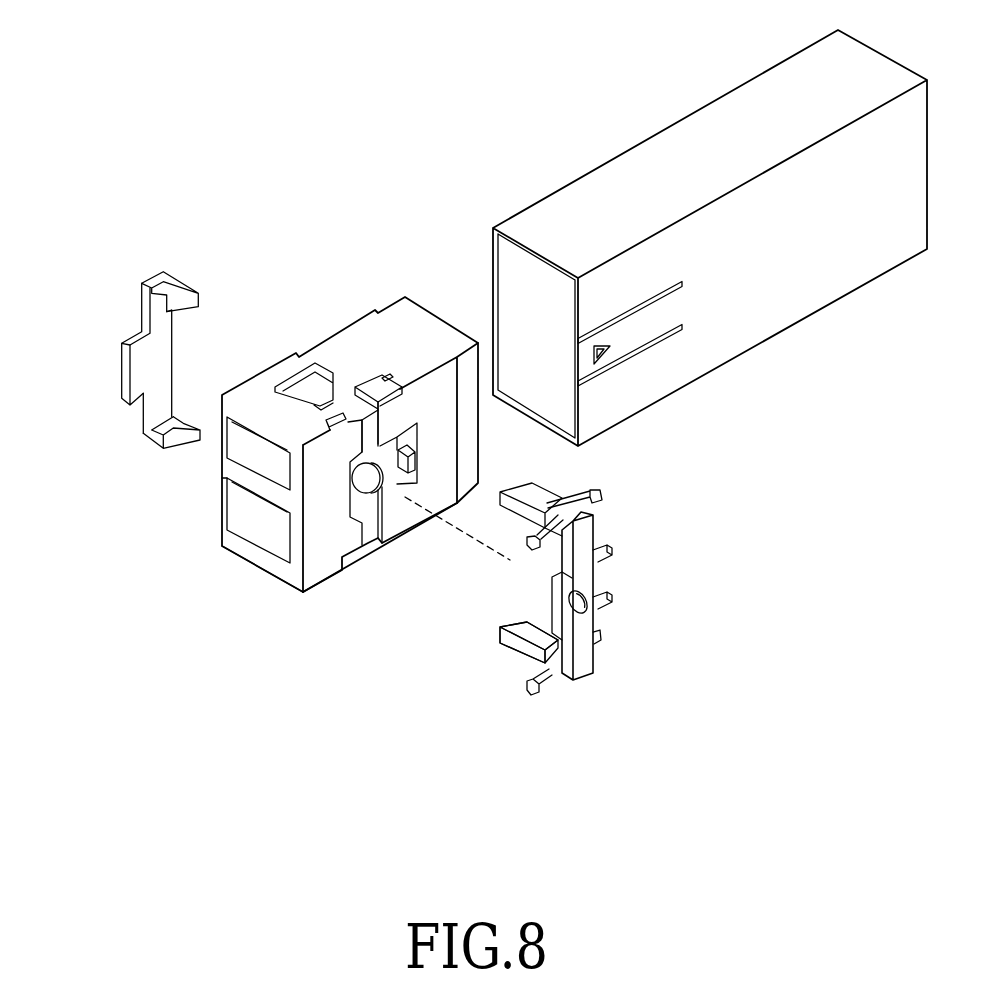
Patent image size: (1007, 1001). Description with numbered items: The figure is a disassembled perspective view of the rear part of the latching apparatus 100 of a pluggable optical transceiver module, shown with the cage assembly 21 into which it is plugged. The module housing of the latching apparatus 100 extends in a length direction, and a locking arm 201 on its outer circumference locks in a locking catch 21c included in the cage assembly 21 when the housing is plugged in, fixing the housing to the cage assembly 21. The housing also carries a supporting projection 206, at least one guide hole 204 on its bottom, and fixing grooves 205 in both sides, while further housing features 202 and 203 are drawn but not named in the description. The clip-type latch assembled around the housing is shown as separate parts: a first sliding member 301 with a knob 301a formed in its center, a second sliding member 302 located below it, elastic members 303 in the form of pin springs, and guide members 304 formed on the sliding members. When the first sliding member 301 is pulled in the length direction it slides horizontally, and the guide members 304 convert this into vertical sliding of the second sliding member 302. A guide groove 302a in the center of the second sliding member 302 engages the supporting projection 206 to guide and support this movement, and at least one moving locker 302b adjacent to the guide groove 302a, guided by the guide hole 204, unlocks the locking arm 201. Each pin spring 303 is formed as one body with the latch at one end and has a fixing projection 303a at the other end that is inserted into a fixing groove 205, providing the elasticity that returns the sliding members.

The latching apparatus 100 is at (421, 104).
The cage assembly 21 is at (683, 110).
The locking catch 21c is at (609, 349).
The locking arm 201 is at (416, 462).
The housing 202 is at (292, 365).
The elastic latch arm 203 is at (333, 376).
The guide hole 204 is at (396, 478).
The fixing groove 205 is at (345, 422).
The supporting projection 206 is at (360, 478).
The first sliding member 301 is at (143, 302).
The knob 301a is at (133, 374).
The second sliding member 302 is at (597, 528).
The guide groove 302a is at (587, 604).
The moving locker 302b is at (612, 600).
The elastic member 303 is at (560, 497).
The fixing projection 303a is at (600, 493).
The guide member 304 is at (185, 450).